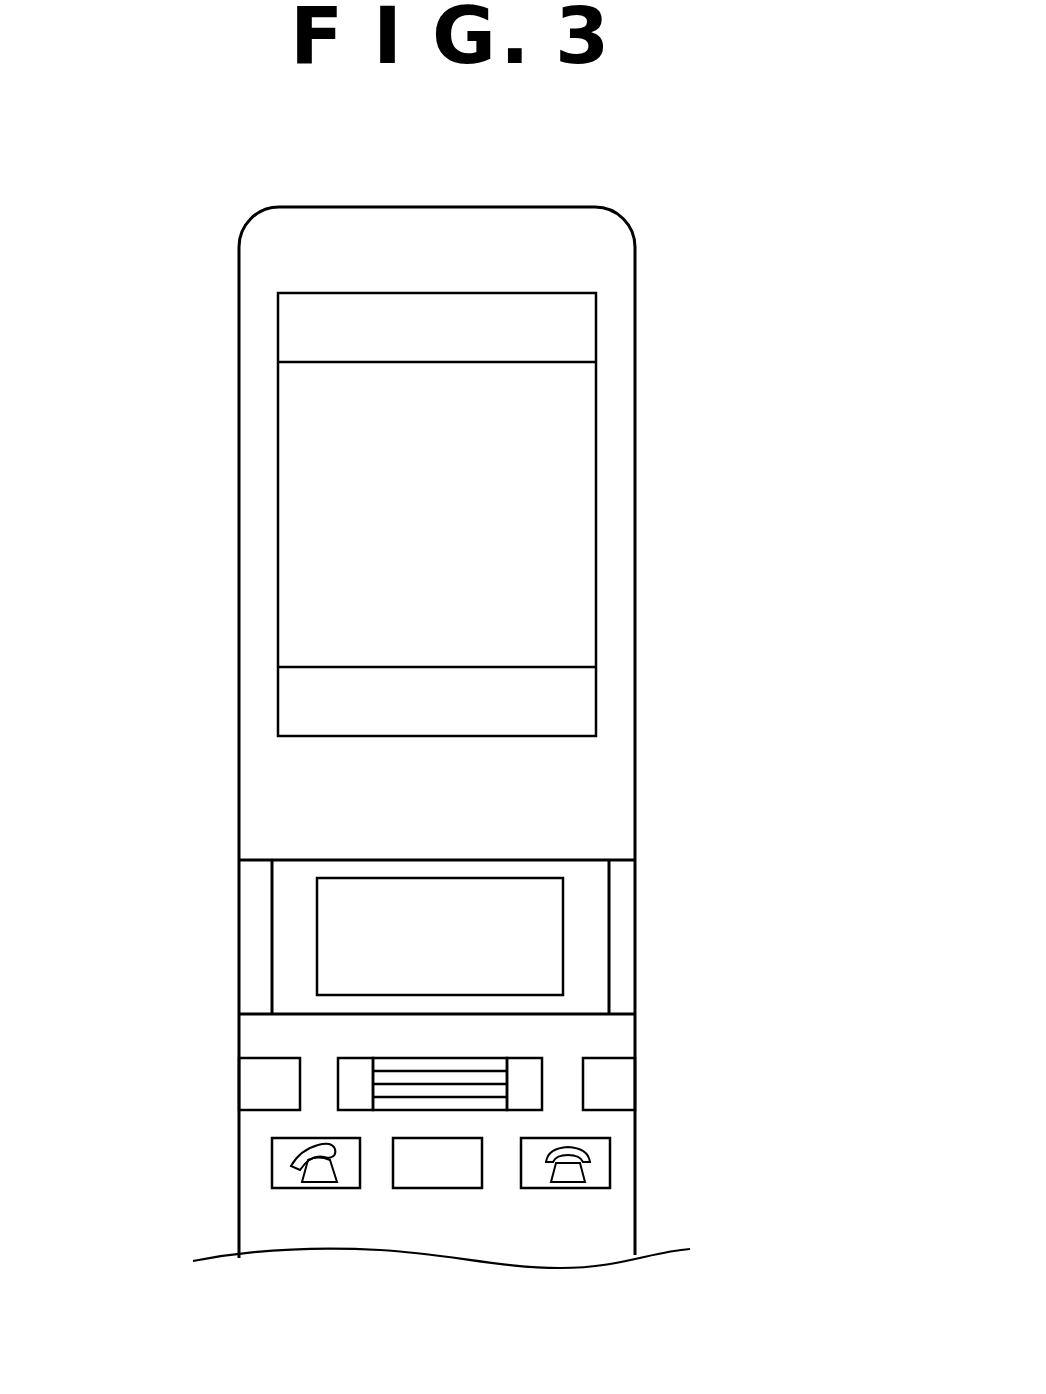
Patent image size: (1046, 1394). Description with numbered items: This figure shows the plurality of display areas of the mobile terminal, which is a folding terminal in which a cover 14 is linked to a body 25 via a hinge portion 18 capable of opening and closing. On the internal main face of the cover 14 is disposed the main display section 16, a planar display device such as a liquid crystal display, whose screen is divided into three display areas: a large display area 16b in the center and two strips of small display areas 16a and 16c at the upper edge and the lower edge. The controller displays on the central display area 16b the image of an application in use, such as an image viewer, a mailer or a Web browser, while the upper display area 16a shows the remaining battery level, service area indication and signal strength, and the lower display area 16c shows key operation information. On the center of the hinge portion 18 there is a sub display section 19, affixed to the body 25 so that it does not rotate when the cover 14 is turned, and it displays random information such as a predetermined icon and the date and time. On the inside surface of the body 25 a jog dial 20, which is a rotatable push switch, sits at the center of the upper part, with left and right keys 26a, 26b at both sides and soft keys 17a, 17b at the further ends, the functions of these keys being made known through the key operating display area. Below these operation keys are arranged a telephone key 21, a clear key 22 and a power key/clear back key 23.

The cover 14 is at (663, 539).
The main display section 16 is at (278, 524).
The display area 16a is at (597, 325).
The display area 16b is at (597, 407).
The display area 16c is at (597, 705).
The hinge portion 18 is at (240, 882).
The sub display section 19 is at (317, 927).
The jog dial 20 is at (475, 1062).
The left key 26a is at (352, 1068).
The right key 26b is at (522, 1100).
The soft key 17a is at (268, 1085).
The soft key 17b is at (627, 1085).
The telephone key 21 is at (282, 1160).
The clear key 22 is at (445, 1188).
The power key/clear back key 23 is at (600, 1178).
The body 25 is at (655, 1168).